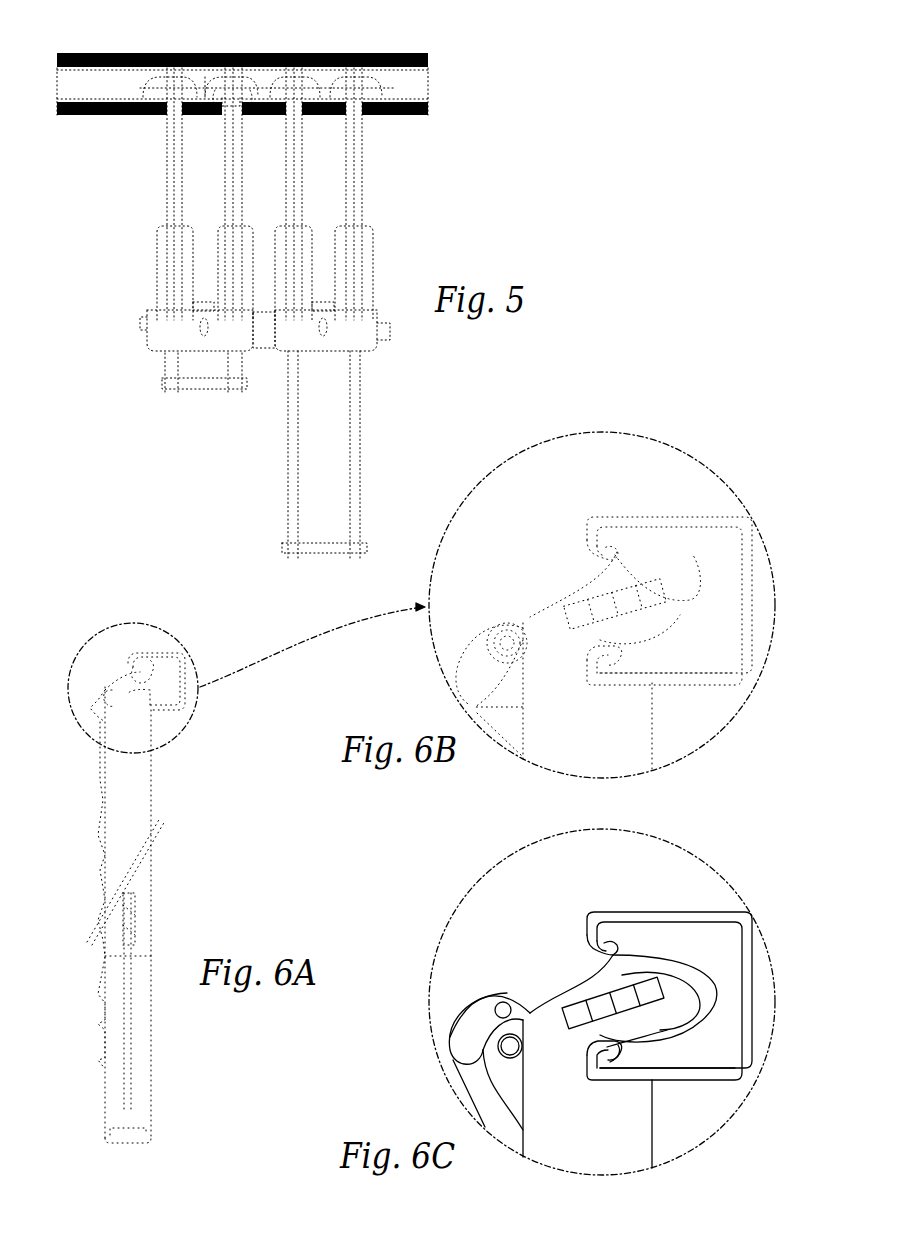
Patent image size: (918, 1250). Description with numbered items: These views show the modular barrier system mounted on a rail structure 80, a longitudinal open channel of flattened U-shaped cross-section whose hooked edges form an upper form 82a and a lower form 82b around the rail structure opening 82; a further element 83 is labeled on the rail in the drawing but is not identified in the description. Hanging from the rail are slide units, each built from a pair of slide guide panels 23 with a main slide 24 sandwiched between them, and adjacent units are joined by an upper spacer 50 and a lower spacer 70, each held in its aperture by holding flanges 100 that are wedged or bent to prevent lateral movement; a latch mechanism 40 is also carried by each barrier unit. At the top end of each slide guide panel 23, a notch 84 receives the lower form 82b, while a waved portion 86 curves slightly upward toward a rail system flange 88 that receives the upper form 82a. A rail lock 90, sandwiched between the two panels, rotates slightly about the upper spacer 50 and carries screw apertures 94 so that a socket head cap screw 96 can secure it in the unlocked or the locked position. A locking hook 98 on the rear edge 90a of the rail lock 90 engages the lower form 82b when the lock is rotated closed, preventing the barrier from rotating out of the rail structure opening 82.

In FIG. 5, the slide guide panel 23 is at (360, 180).
In FIG. 6A, the slide guide panel 23 is at (143, 882).
In FIG. 5, the main slide 24 is at (357, 453).
In FIG. 6A, the main slide 24 is at (143, 1088).
In FIG. 5, the latch mechanism 40 is at (170, 332).
In FIG. 6A, the latch mechanism 40 is at (97, 923).
In FIG. 5, the upper spacer 50 is at (210, 75).
In FIG. 5, the lower spacer 70 is at (385, 343).
In FIG. 5, the rail structure 80 is at (107, 52).
In FIG. 6A, the rail structure 80 is at (153, 650).
In FIG. 6B, the rail structure 80 is at (650, 517).
In FIG. 6C, the rail structure 80 is at (650, 912).
In FIG. 5, the rail structure opening 82 is at (105, 118).
In FIG. 6B, the upper form 82a is at (608, 555).
In FIG. 6C, the upper form 82a is at (608, 952).
In FIG. 6B, the lower form 82b is at (595, 648).
In FIG. 6C, the lower form 82b is at (590, 1050).
In FIG. 5, the rail channel 83 is at (405, 80).
In FIG. 6A, the rail channel 83 is at (172, 692).
In FIG. 6B, the rail channel 83 is at (720, 565).
In FIG. 6C, the rail channel 83 is at (728, 960).
In FIG. 6A, the notch 84 is at (125, 712).
In FIG. 6B, the notch 84 is at (600, 667).
In FIG. 6C, the notch 84 is at (590, 1068).
In FIG. 6B, the waved portion 86 is at (683, 593).
In FIG. 6C, the waved portion 86 is at (675, 990).
In FIG. 6B, the rail system flange 88 is at (608, 527).
In FIG. 6C, the rail system flange 88 is at (608, 922).
In FIG. 5, the rail lock 90 is at (222, 103).
In FIG. 6A, the rail lock 90 is at (88, 717).
In FIG. 6B, the rail lock 90 is at (478, 683).
In FIG. 6C, the rail lock 90 is at (693, 1017).
In FIG. 6C, the rear edge 90a is at (618, 1055).
In FIG. 6C, the screw apertures 94 is at (503, 1003).
In FIG. 6A, the socket head cap screw 96 is at (98, 693).
In FIG. 6B, the socket head cap screw 96 is at (507, 640).
In FIG. 6C, the locking hook 98 is at (665, 1050).
In FIG. 6A, the holding flanges 100 is at (133, 897).
In FIG. 6B, the holding flanges 100 is at (648, 590).
In FIG. 6C, the holding flanges 100 is at (655, 985).